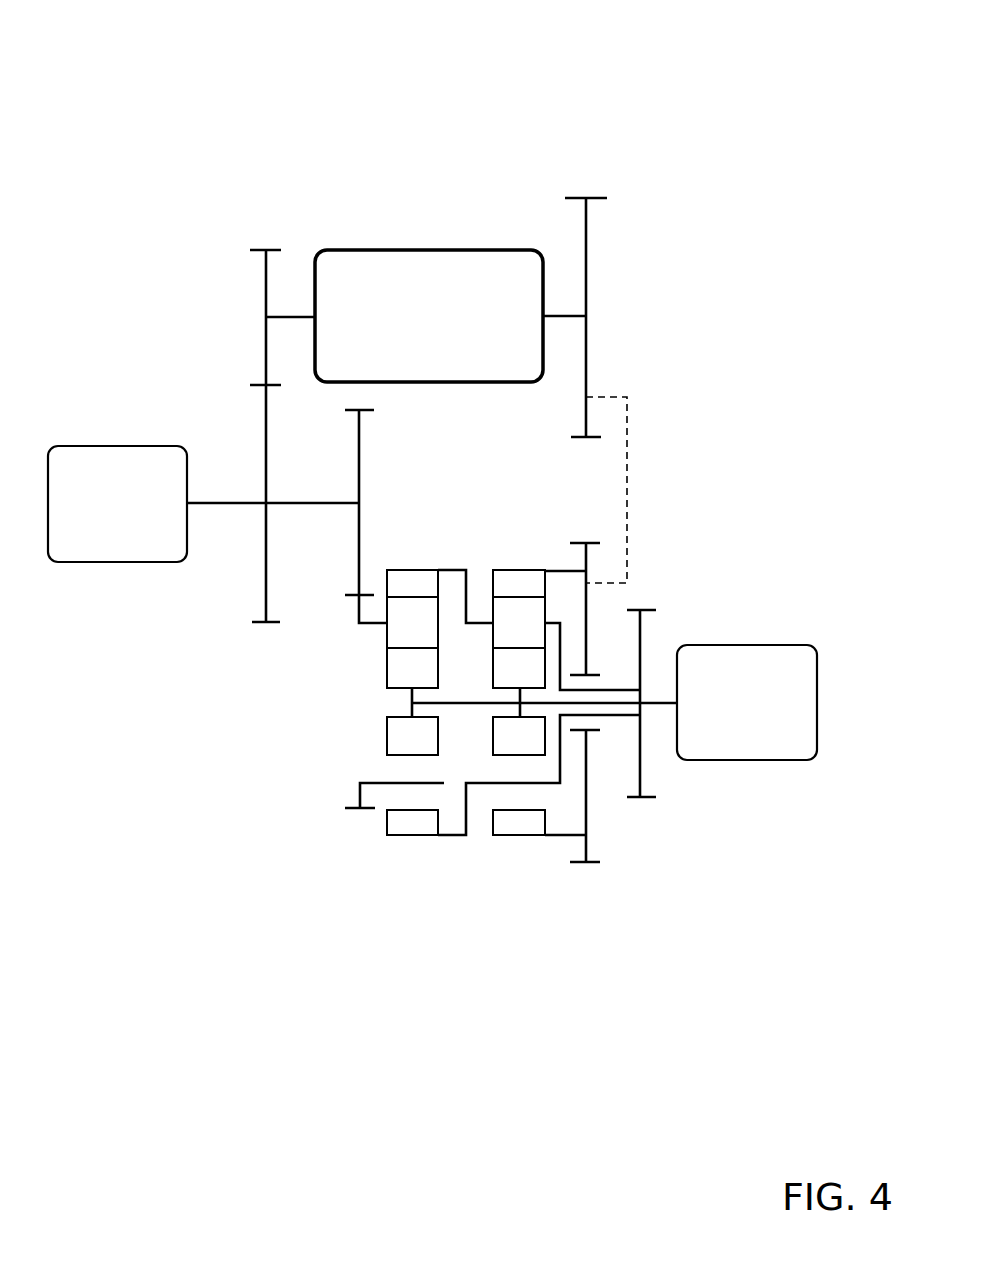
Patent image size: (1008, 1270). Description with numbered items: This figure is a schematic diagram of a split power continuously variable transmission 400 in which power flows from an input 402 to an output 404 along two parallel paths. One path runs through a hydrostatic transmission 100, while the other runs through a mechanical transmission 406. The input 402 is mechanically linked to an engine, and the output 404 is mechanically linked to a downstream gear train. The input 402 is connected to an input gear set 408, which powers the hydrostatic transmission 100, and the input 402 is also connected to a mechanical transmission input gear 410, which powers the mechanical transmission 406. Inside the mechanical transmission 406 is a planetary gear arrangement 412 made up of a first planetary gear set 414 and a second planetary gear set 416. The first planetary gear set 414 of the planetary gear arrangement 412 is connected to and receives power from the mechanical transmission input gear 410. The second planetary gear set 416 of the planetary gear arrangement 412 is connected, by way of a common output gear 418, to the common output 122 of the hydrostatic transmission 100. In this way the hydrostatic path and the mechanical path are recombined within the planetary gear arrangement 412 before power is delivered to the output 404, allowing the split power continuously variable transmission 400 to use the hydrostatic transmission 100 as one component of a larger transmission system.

The split power continuously variable transmission 400 is at (148, 62).
The hydrostatic transmission 100 is at (429, 316).
The common output 122 is at (572, 305).
The input 402 is at (117, 504).
The output 404 is at (747, 702).
The mechanical transmission 406 is at (445, 687).
The input gear set 408 is at (258, 428).
The mechanical transmission input gear 410 is at (367, 448).
The planetary gear arrangement 412 is at (441, 614).
The first planetary gear set 414 is at (438, 566).
The second planetary gear set 416 is at (545, 566).
The common output gear 418 is at (596, 244).